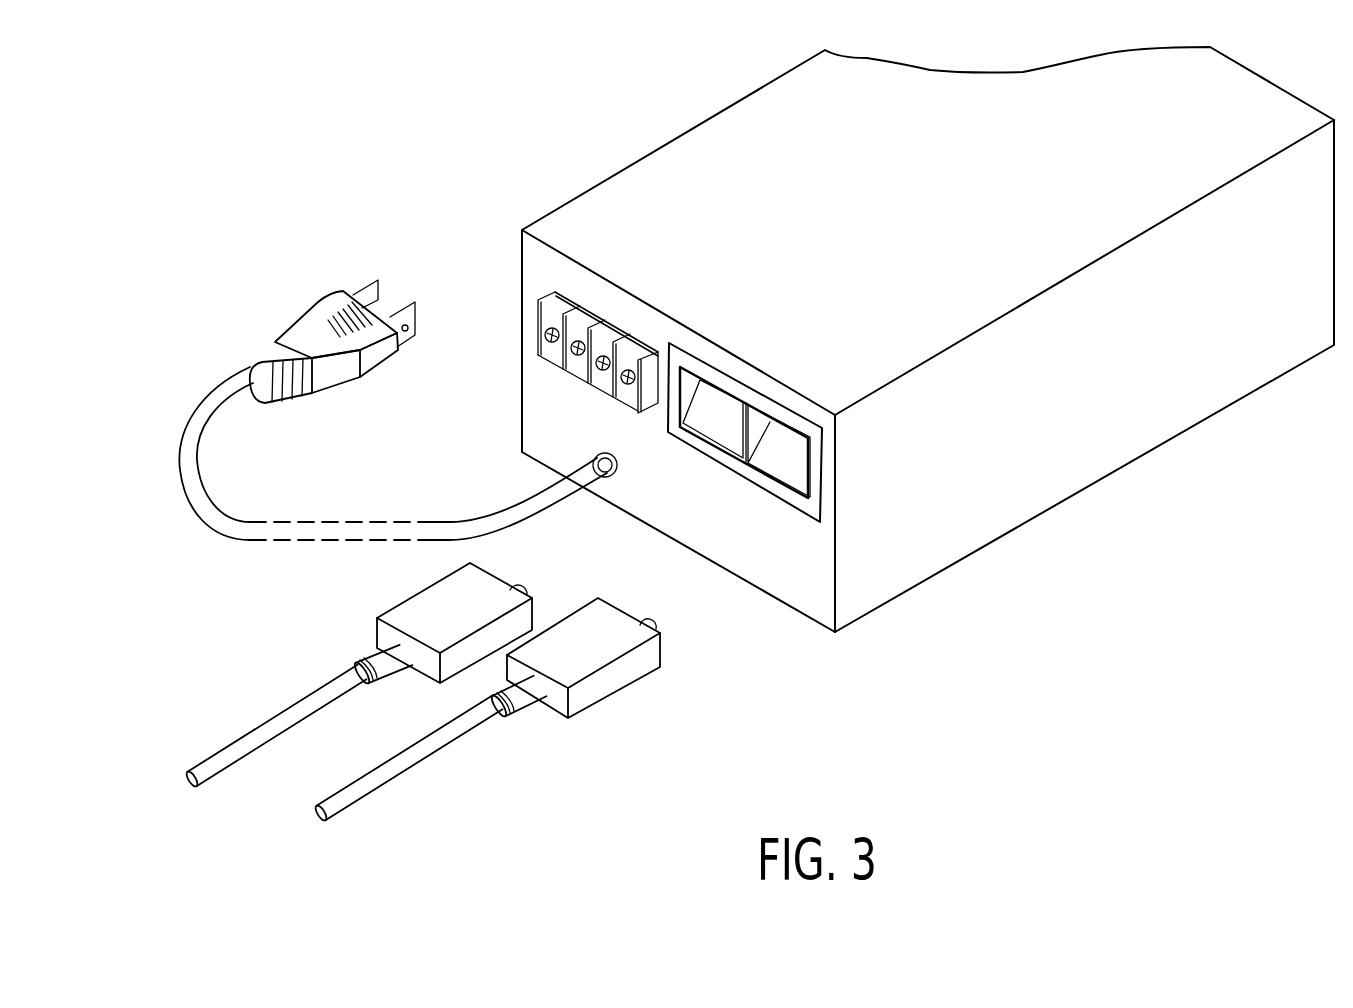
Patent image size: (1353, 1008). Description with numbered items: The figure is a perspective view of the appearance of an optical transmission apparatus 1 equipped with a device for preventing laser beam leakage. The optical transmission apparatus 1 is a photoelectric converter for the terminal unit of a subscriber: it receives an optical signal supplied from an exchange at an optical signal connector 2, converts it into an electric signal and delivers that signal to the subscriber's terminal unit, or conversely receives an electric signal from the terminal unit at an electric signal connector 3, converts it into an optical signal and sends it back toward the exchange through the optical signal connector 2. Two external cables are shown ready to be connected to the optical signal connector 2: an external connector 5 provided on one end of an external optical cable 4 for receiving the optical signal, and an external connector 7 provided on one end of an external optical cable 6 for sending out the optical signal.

The optical transmission apparatus 1 is at (1062, 483).
The optical signal connector 2 is at (823, 472).
The electric signal connector 3 is at (618, 325).
The external optical cable 4 is at (297, 718).
The external connector 5 is at (423, 607).
The external optical cable 6 is at (428, 757).
The external connector 7 is at (623, 677).